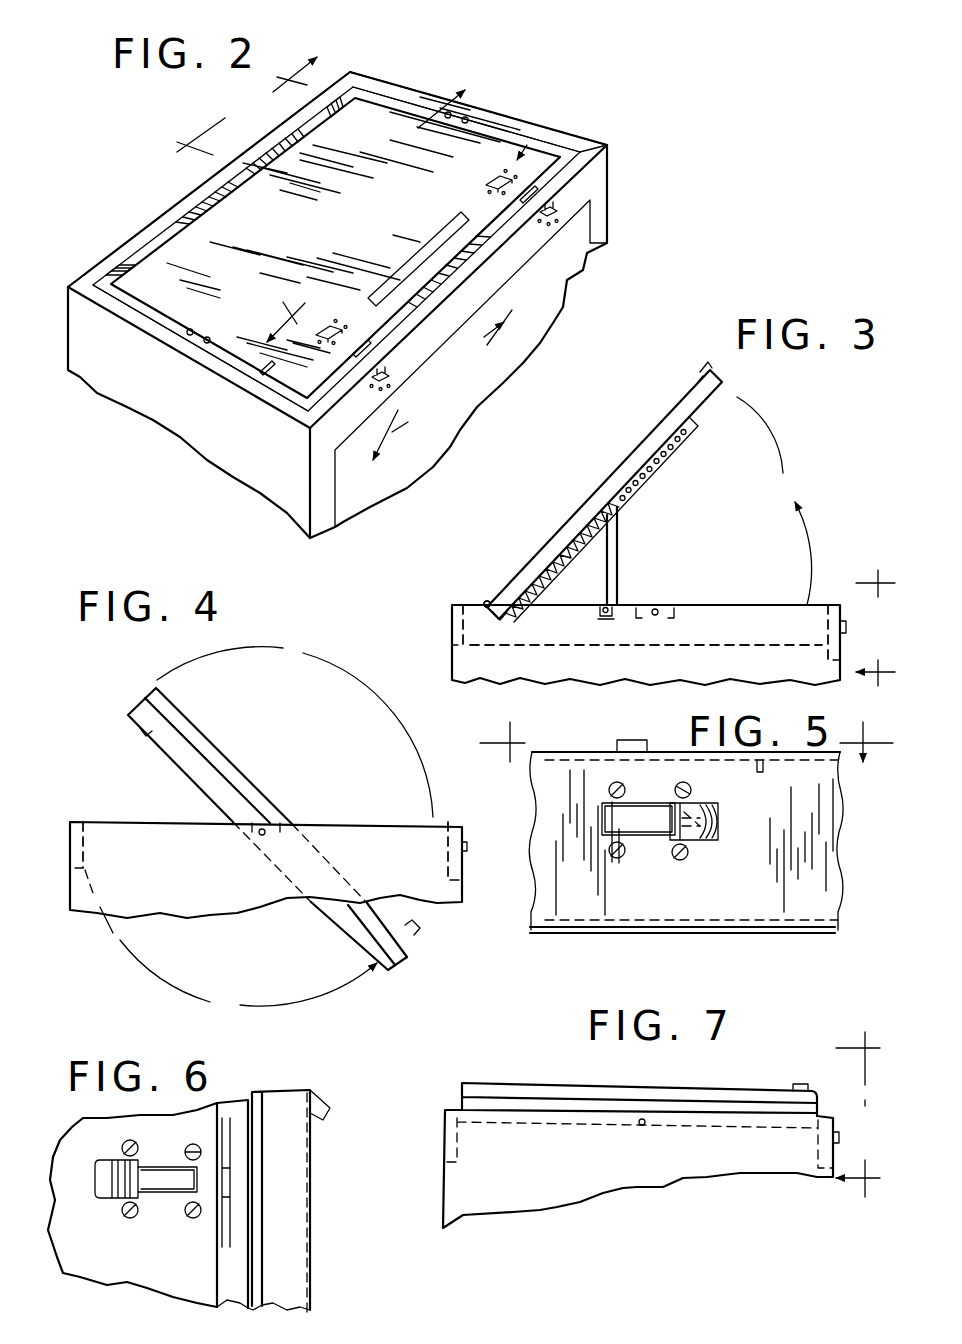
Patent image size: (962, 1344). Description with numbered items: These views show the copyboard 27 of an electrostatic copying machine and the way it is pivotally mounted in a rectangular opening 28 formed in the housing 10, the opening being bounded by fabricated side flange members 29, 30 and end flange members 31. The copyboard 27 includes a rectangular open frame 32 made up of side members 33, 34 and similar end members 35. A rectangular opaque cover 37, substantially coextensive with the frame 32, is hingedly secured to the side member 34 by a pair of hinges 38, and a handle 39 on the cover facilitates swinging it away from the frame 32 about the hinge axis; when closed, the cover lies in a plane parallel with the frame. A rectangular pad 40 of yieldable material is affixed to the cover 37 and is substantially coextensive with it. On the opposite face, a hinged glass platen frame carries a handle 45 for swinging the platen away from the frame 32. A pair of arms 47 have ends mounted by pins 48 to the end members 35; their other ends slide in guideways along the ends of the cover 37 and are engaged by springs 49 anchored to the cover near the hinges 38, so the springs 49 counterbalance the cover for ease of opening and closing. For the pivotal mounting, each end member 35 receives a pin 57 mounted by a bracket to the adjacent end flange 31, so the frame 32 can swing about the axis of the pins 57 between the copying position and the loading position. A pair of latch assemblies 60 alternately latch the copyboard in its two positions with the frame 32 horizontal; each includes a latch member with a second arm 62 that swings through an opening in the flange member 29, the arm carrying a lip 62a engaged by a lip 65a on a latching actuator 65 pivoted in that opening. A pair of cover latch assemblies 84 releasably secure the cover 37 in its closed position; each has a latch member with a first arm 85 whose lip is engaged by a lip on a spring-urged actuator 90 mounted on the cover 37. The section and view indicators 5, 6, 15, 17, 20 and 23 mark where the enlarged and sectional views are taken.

In FIG. 3, the section line 5- 5 is at (878, 629).
In FIG. 5, the section line 6- 6 is at (686, 741).
In FIG. 2, the housing 10 is at (622, 176).
In FIG. 3, the housing 10 is at (452, 654).
In FIG. 4, the housing 10 is at (70, 896).
In FIG. 7, the housing 10 is at (504, 1186).
In FIG. 2, the view arrow 15 is at (346, 376).
In FIG. 7, the section line 17- 17 is at (866, 1111).
In FIG. 2, the view arrow 20 is at (355, 222).
In FIG. 2, the view arrow 23 is at (400, 95).
In FIG. 2, the copyboard 27 is at (564, 140).
In FIG. 4, the copyboard 27 is at (228, 756).
In FIG. 7, the copyboard 27 is at (567, 1081).
In FIG. 2, the rectangular opening 28 is at (266, 368).
In FIG. 3, the rectangular opening 28 is at (824, 633).
In FIG. 4, the rectangular opening 28 is at (445, 840).
In FIG. 7, the rectangular opening 28 is at (460, 1140).
In FIG. 2, the side flange member 29 is at (510, 220).
In FIG. 3, the side flange member 29 is at (831, 604).
In FIG. 4, the side flange member 29 is at (449, 830).
In FIG. 5, the side flange member 29 is at (828, 872).
In FIG. 6, the side flange member 29 is at (285, 1268).
In FIG. 2, the side flange member 30 is at (316, 97).
In FIG. 3, the side flange member 30 is at (460, 605).
In FIG. 4, the side flange member 30 is at (82, 820).
In FIG. 2, the end flange member 31 is at (510, 122).
In FIG. 2, the rectangular open frame 32 is at (572, 138).
In FIG. 2, the side member 33 is at (398, 323).
In FIG. 6, the side member 33 is at (240, 1106).
In FIG. 2, the side member 34 is at (212, 194).
In FIG. 2, the end member 35 is at (405, 98).
In FIG. 2, the cover 37 is at (346, 217).
In FIG. 3, the cover 37 is at (638, 438).
In FIG. 6, the cover 37 is at (95, 1260).
In FIG. 2, the hinge 38 is at (336, 98).
In FIG. 3, the hinge 38 is at (488, 603).
In FIG. 2, the handle 39 is at (449, 233).
In FIG. 3, the handle 39 is at (694, 372).
In FIG. 3, the pad 40 is at (666, 464).
In FIG. 7, the handle 45 is at (802, 1082).
In FIG. 3, the arm 47 is at (619, 548).
In FIG. 3, the pin 48 is at (600, 607).
In FIG. 3, the spring 49 is at (593, 496).
In FIG. 3, the pin 57 is at (656, 608).
In FIG. 4, the pin 57 is at (258, 836).
In FIG. 7, the pin 57 is at (645, 1126).
In FIG. 2, the latch assembly 60 is at (560, 224).
In FIG. 3, the latch assembly 60 is at (848, 627).
In FIG. 4, the latch assembly 60 is at (467, 845).
In FIG. 5, the latch assembly 60 is at (724, 831).
In FIG. 5, the second arm 62 is at (643, 824).
In FIG. 5, the lip 62a is at (705, 838).
In FIG. 5, the latching actuator 65 is at (716, 808).
In FIG. 6, the latching actuator 65 is at (328, 1110).
In FIG. 7, the latching actuator 65 is at (845, 1137).
In FIG. 5, the lip 65a is at (672, 818).
In FIG. 2, the cover latch assembly 84 is at (484, 182).
In FIG. 5, the cover latch assembly 84 is at (651, 746).
In FIG. 6, the cover latch assembly 84 is at (158, 1163).
In FIG. 6, the first arm 85 is at (165, 1184).
In FIG. 5, the actuator 90 is at (621, 741).
In FIG. 6, the actuator 90 is at (112, 1174).